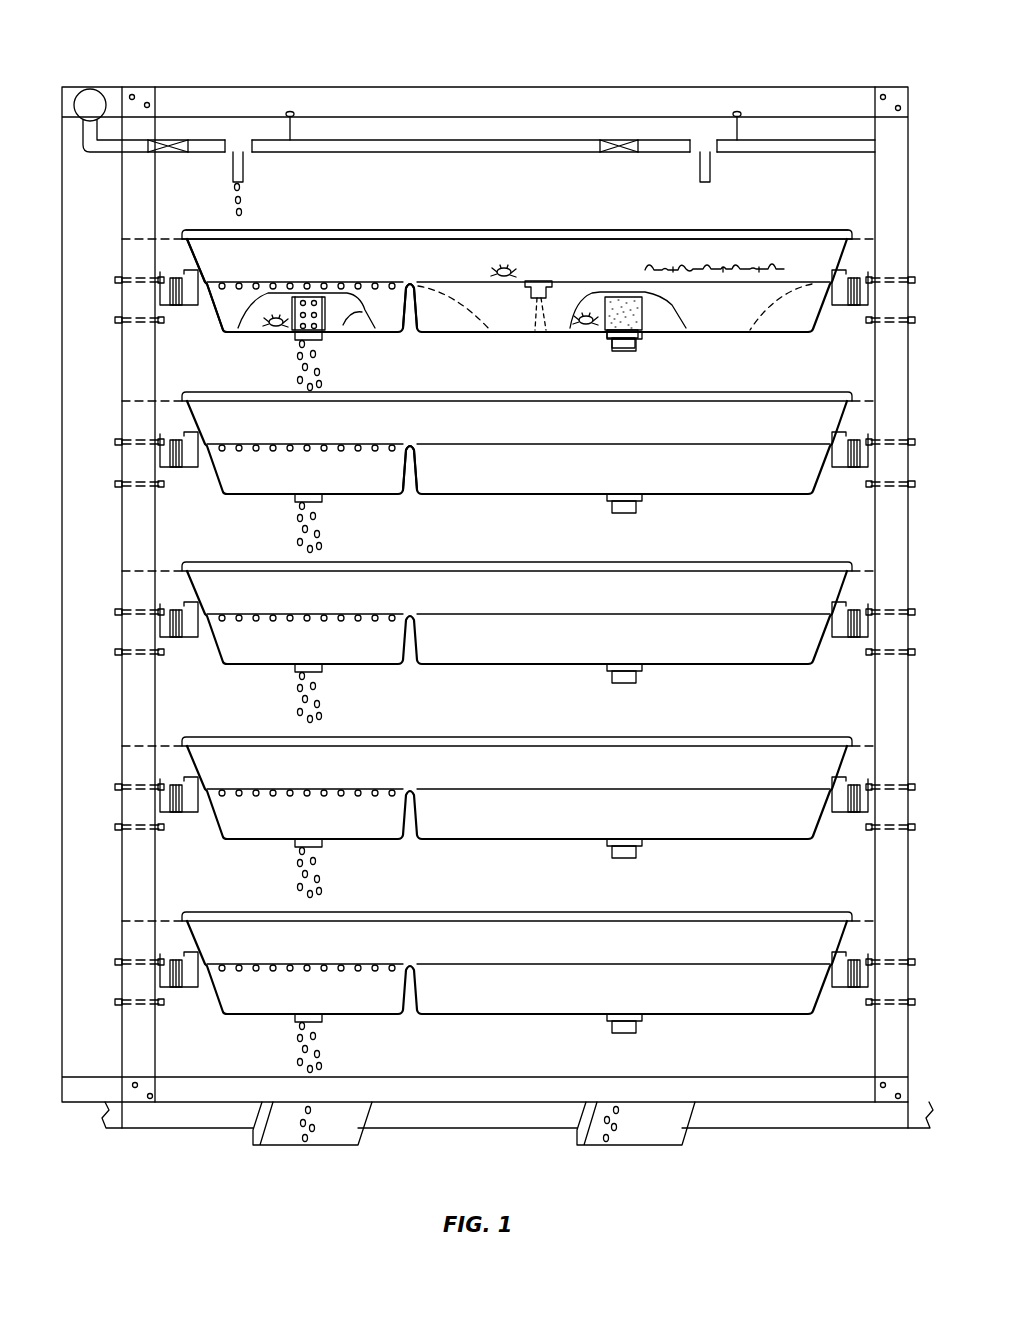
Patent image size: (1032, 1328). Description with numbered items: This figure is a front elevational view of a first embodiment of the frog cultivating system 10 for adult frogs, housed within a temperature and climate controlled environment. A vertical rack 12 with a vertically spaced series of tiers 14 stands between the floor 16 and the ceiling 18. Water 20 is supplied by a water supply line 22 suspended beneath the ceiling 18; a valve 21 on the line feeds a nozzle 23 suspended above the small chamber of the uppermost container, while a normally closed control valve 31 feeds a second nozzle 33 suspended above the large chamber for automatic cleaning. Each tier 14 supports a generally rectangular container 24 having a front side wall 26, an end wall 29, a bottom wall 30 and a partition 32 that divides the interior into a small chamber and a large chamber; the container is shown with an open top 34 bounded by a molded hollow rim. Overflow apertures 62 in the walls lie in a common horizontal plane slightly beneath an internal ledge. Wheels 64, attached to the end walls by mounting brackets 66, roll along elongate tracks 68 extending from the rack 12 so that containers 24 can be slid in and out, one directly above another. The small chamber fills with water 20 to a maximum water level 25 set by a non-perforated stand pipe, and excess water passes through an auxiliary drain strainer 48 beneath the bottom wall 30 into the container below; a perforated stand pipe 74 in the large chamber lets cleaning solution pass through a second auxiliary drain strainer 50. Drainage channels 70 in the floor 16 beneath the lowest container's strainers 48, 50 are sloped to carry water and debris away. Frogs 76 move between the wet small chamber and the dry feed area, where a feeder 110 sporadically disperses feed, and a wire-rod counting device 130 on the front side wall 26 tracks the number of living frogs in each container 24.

The frog cultivating system 10 is at (720, 60).
The vertical rack 12 is at (176, 100).
The tiers 14 is at (128, 265).
The floor 16 is at (177, 1130).
The ceiling 18 is at (103, 87).
The water 20 is at (246, 203).
The valve 21 is at (170, 155).
The water supply line 22 is at (89, 148).
The nozzle 23 is at (246, 166).
The container 24 is at (579, 250).
The maximum water level 25 is at (330, 316).
The front side wall 26 is at (205, 250).
The end wall 29 is at (222, 323).
The bottom wall 30 is at (500, 334).
The control valve 31 is at (620, 154).
The partition 32 is at (412, 316).
The nozzle 33 is at (708, 176).
The open top 34 is at (490, 228).
The auxiliary drain strainer 48 is at (293, 336).
The auxiliary drain strainer 50 is at (632, 347).
The overflow apertures 62 is at (407, 470).
The wheels 64 is at (187, 458).
The mounting brackets 66 is at (187, 432).
The tracks 68 is at (170, 472).
The drainage channels 70 is at (338, 1130).
The perforated stand pipe 74 is at (640, 314).
The frogs 76 is at (265, 325).
The feeder 110 is at (615, 324).
The counting device 130 is at (787, 267).